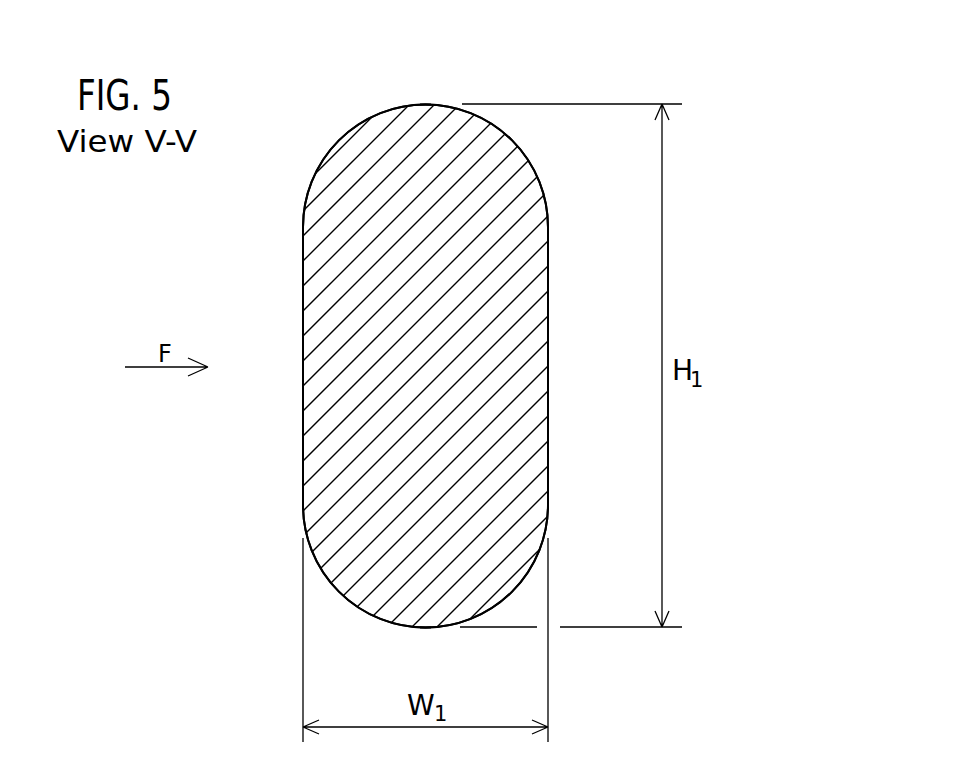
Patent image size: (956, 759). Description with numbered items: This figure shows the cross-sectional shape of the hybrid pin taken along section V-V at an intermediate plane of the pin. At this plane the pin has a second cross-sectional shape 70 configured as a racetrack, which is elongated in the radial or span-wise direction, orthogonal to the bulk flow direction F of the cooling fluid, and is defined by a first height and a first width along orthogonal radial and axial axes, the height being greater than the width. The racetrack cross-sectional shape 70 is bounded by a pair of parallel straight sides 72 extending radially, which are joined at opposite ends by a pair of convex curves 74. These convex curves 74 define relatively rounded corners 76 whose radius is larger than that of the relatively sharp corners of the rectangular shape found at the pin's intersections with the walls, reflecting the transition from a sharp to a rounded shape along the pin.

The second cross-sectional shape 70 is at (522, 91).
The parallel straight sides 72 is at (302, 331).
The convex curves 74 is at (386, 109).
The rounded corners 76 is at (425, 103).